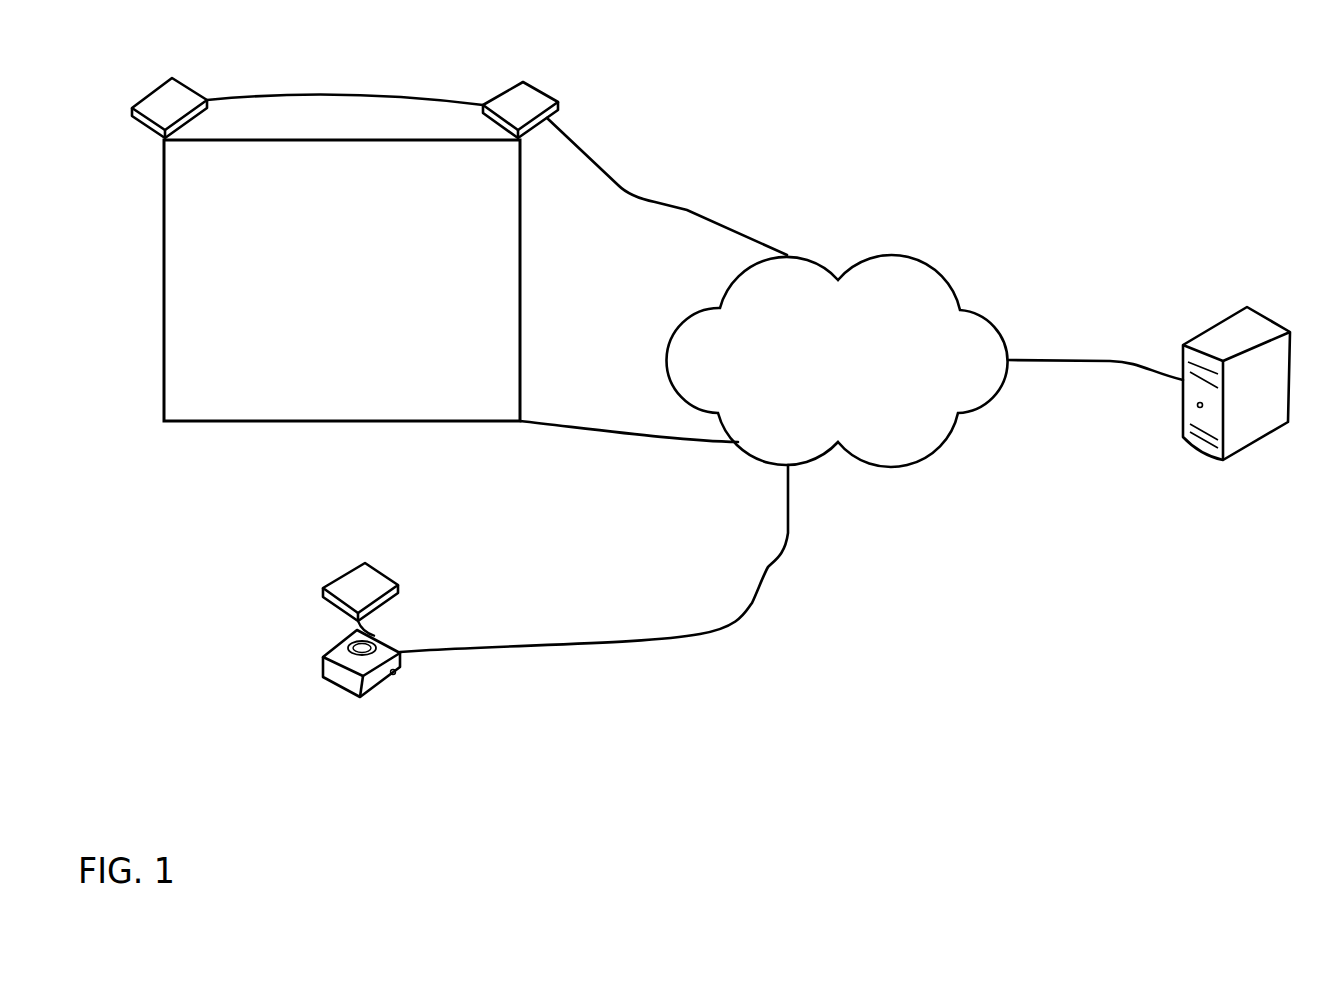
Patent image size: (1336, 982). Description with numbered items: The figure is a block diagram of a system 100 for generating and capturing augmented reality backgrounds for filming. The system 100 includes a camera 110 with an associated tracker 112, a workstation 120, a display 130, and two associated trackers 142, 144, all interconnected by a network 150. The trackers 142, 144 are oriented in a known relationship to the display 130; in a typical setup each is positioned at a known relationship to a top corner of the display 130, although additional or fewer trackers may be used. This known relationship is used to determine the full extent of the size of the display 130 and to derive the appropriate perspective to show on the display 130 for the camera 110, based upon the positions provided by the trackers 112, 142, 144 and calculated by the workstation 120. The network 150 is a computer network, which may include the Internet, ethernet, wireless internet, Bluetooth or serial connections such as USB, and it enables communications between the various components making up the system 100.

The system 100 is at (801, 616).
The camera 110 is at (352, 681).
The tracker 112 is at (371, 580).
The workstation 120 is at (1235, 400).
The display 130 is at (342, 303).
The tracker 142 is at (183, 87).
The tracker 144 is at (519, 89).
The network 150 is at (837, 361).